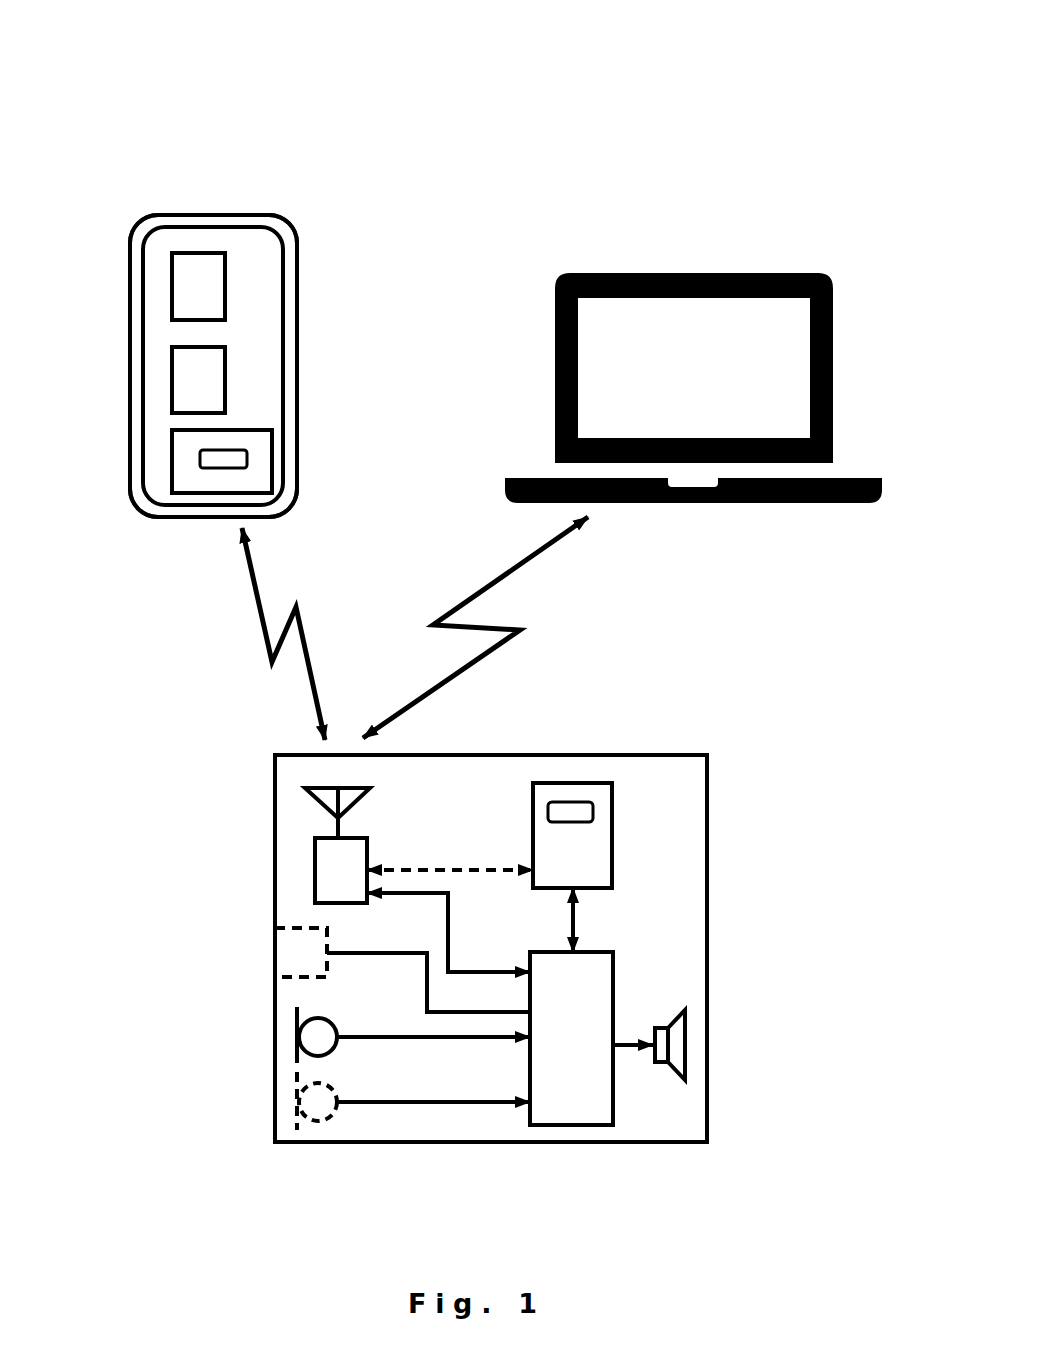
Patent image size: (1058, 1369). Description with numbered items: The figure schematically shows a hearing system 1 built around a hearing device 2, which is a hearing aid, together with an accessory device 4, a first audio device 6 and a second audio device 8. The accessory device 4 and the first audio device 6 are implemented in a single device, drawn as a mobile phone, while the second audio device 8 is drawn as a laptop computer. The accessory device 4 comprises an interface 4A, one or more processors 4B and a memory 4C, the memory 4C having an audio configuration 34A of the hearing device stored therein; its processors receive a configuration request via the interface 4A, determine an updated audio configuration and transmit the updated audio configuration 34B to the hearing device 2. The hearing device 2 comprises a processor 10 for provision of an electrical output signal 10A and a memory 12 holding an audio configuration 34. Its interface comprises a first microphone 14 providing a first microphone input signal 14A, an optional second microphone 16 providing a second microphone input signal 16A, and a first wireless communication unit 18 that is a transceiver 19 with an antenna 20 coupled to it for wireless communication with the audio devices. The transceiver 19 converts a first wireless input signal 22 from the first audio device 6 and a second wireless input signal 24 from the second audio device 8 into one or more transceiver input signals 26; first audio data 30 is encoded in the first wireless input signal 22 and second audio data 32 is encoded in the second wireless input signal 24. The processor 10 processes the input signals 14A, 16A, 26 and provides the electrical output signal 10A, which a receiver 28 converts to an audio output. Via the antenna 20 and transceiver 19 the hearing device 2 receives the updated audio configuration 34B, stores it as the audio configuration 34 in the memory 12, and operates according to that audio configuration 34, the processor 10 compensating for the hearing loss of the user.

The hearing system 1 is at (228, 63).
The hearing device 2 is at (707, 832).
The accessory device 4 is at (210, 218).
The interface of accessory device 4A is at (172, 293).
The one or more processors of accessory device 4B is at (172, 387).
The memory of accessory device 4C is at (172, 470).
The first audio device 6 is at (285, 220).
The second audio device 8 is at (673, 273).
The processor 10 is at (575, 1125).
The electrical output signal 10A is at (633, 1047).
The memory 12 is at (600, 867).
The first microphone 14 is at (300, 1037).
The first microphone input signal 14A is at (438, 1040).
The second microphone 16 is at (300, 1102).
The second microphone input signal 16A is at (378, 1105).
The wireless communication unit 18 is at (315, 878).
The transceiver 19 is at (341, 870).
The antenna 20 is at (357, 802).
The first wireless input signal 22 is at (234, 648).
The second wireless input signal 24 is at (512, 627).
The transceiver input signal 26 is at (450, 923).
The receiver 28 is at (683, 1043).
The first audio data 30 is at (234, 634).
The second audio data 32 is at (508, 572).
The audio configuration 34 is at (595, 810).
The audio configuration 34A is at (247, 458).
The updated audio configuration 34B is at (253, 600).